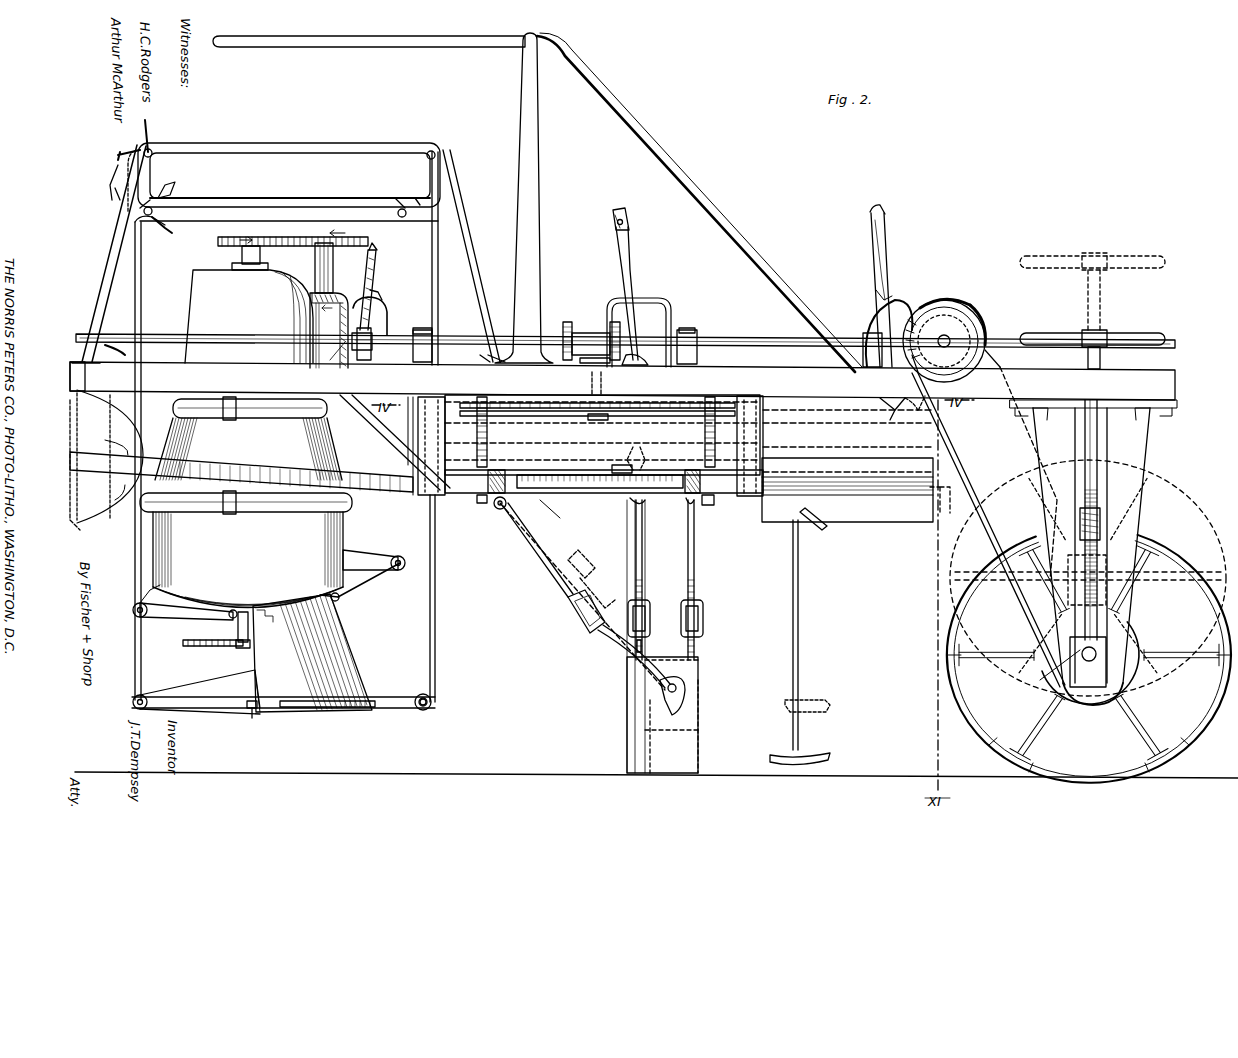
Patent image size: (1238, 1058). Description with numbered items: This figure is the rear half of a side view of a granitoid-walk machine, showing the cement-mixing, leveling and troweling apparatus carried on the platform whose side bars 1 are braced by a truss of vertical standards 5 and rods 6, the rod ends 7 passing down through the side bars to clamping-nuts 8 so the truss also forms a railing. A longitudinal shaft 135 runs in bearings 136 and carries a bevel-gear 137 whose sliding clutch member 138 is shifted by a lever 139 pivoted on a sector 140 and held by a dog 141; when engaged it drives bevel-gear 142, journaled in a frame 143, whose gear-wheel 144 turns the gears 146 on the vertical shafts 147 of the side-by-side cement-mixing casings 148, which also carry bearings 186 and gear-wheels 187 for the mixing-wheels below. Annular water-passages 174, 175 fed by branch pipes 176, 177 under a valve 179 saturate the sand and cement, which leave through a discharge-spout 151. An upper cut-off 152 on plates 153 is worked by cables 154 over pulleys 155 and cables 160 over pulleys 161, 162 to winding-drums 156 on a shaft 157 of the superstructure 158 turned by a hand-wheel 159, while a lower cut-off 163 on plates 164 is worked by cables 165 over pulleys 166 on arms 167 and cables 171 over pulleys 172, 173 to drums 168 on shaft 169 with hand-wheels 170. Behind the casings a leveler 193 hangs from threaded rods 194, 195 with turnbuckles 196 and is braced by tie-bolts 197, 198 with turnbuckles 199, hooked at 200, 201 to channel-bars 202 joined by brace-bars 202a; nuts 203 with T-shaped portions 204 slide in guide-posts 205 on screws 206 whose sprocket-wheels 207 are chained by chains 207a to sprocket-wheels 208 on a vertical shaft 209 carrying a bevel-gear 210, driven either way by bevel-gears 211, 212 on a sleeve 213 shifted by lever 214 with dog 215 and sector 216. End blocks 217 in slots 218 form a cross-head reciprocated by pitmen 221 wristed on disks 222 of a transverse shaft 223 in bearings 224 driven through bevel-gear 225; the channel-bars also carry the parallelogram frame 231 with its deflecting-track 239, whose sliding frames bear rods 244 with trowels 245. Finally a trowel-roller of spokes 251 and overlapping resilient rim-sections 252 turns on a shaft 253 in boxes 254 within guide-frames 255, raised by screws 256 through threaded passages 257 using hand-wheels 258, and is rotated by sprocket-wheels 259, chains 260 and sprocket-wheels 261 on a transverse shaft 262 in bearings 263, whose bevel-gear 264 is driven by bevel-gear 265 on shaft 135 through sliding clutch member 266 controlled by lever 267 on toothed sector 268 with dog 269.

The side bars 1 is at (622, 381).
The vertical standards 5 is at (540, 181).
The rods 6 is at (334, 47).
The rod ends 7 is at (692, 195).
The clamping-nuts 8 is at (876, 418).
The longitudinal shaft 135 is at (752, 340).
The bearings 136 is at (420, 332).
The bevel-gear 137 is at (338, 365).
The sliding clutch member 138 is at (368, 362).
The lever 139 is at (378, 255).
The sector 140 is at (388, 312).
The dog 141 is at (380, 292).
The bevel-gear 142 is at (340, 295).
The frame 143 is at (334, 255).
The gear-wheel 144 is at (351, 231).
The gears 146 is at (233, 233).
The vertical shafts 147 is at (255, 242).
The cement-mixing casings 148 is at (249, 316).
The discharge-spout 151 is at (355, 640).
The cut-off 152 is at (280, 606).
The plates 153 is at (340, 603).
The cables 154 is at (190, 619).
The pulleys 155 is at (150, 608).
The winding-drums 156 is at (177, 185).
The shaft 157 is at (143, 211).
The superstructure 158 is at (272, 160).
The hand-wheel 159 is at (170, 231).
The cables 160 is at (283, 204).
The pulleys 161 is at (392, 556).
The pulleys 162 is at (405, 205).
The cut-off 163 is at (315, 694).
The plates 164 is at (252, 720).
The cables 165 is at (140, 307).
The pulleys 166 is at (198, 686).
The arms 167 is at (182, 690).
The drums 168 is at (160, 140).
The shaft 169 is at (160, 160).
The hand-wheels 170 is at (124, 166).
The cables 171 is at (283, 150).
The pulleys 172 is at (433, 708).
The pulleys 173 is at (435, 152).
The annular water-passage 174 is at (246, 420).
The annular water-passage 175 is at (252, 515).
The branch pipe 176 is at (190, 420).
The branch pipe 177 is at (185, 515).
The valve 179 is at (130, 351).
The bearings 186 is at (238, 630).
The gear-wheels 187 is at (183, 644).
The leveler 193 is at (648, 636).
The threaded rod 194 is at (686, 648).
The threaded rod 195 is at (688, 570).
The turnbuckles 196 is at (650, 608).
The tie-bolt 197 is at (625, 660).
The tie-rod 198 is at (540, 535).
The turnbuckles 199 is at (590, 622).
The hook 200 is at (646, 505).
The hook 201 is at (498, 510).
The channel-bars 202 is at (566, 475).
The brace-bars 202a is at (620, 508).
The nuts 203 is at (722, 517).
The T-shaped portions 204 is at (470, 498).
The guide-posts 205 is at (452, 445).
The screws 206 is at (705, 438).
The sprocket-wheels 207 is at (488, 415).
The chains 207a is at (655, 418).
The sprocket-wheels 208 is at (582, 420).
The vertical shaft 209 is at (602, 386).
The bevel-gear 210 is at (582, 383).
The bevel-gear 211 is at (566, 320).
The bevel-gear 212 is at (620, 296).
The sleeve 213 is at (590, 333).
The lever 214 is at (616, 244).
The dog 215 is at (638, 278).
The sector 216 is at (664, 300).
The end blocks 217 is at (512, 520).
The slot 218 is at (570, 498).
The pitmen 221 is at (380, 475).
The disks 222 is at (100, 520).
The transverse shaft 223 is at (100, 450).
The bearings 224 is at (102, 395).
The bevel-gear 225 is at (115, 495).
The parallelogram-shaped frame 231 is at (950, 500).
The deflecting-track 239 is at (818, 540).
The rod 244 is at (800, 645).
The trowel 245 is at (826, 752).
The spokes 251 is at (1003, 652).
The resilient rim-section 252 is at (965, 597).
The shaft 253 is at (1060, 672).
The boxes 254 is at (1095, 670).
The guide-frames 255 is at (1112, 436).
The screws 256 is at (1098, 478).
The threaded passages 257 is at (1102, 520).
The hand-wheels 258 is at (1160, 258).
The sprocket-wheels 259 is at (1115, 618).
The sprocket-chains 260 is at (952, 445).
The sprocket-wheels 261 is at (960, 300).
The transverse shaft 262 is at (944, 341).
The bearings 263 is at (985, 330).
The bevel-gear 264 is at (978, 318).
The bevel-gear 265 is at (928, 305).
The sliding clutch member 266 is at (898, 370).
The lever 267 is at (893, 226).
The toothed sector 268 is at (870, 312).
The dog 269 is at (878, 288).